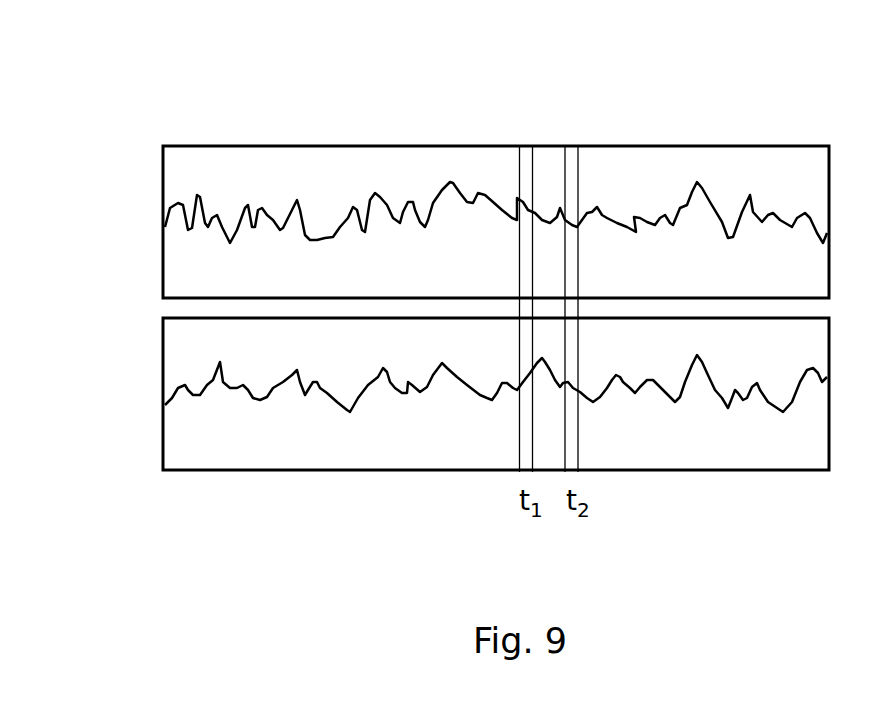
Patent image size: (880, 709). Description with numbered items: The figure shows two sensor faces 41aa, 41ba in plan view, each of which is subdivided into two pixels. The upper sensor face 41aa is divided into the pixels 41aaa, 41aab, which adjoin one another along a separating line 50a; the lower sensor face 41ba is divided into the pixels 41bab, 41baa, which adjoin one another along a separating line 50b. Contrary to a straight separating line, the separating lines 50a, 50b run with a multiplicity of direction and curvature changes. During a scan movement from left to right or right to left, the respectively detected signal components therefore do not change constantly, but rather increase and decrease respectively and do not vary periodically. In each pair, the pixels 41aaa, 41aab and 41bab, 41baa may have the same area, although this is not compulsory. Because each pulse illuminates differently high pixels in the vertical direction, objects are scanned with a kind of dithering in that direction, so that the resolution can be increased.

The sensor face 41aa is at (145, 147).
The pixel 41aaa is at (215, 168).
The pixel 41aab is at (388, 255).
The sensor face 41ba is at (145, 318).
The pixel 41baa is at (355, 355).
The pixel 41bab is at (249, 442).
The separating line 50a is at (610, 219).
The separating line 50b is at (662, 390).